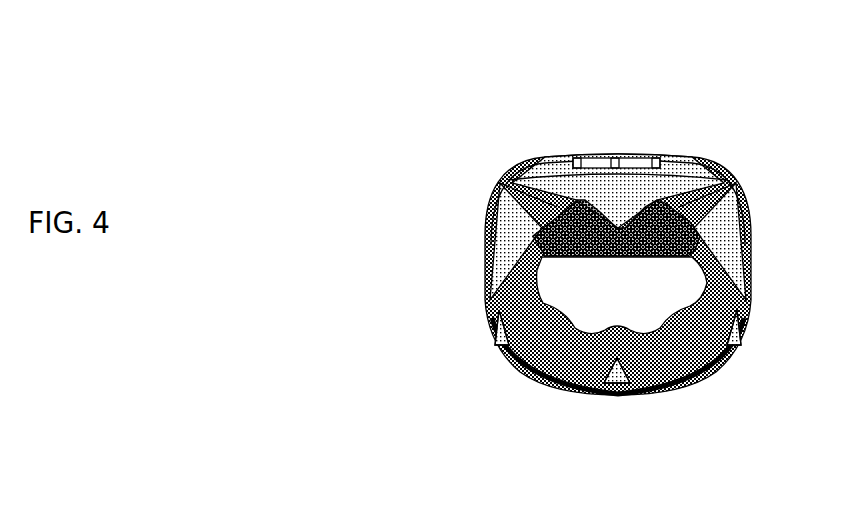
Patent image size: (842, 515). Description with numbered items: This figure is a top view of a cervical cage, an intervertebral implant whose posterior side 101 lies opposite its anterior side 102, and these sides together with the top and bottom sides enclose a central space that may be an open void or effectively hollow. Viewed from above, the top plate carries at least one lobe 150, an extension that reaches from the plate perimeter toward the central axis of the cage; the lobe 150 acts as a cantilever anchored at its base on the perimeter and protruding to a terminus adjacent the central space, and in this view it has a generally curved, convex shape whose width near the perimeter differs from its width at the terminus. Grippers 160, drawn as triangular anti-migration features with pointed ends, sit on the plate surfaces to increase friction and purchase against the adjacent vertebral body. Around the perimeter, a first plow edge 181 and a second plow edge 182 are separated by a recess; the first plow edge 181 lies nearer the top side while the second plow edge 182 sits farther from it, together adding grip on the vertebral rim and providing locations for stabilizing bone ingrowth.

The posterior side 101 is at (523, 140).
The anterior side 102 is at (522, 388).
The lobe 150 is at (520, 267).
The grippers 160 is at (734, 343).
The first plow edge 181 is at (687, 177).
The second plow edge 182 is at (631, 157).